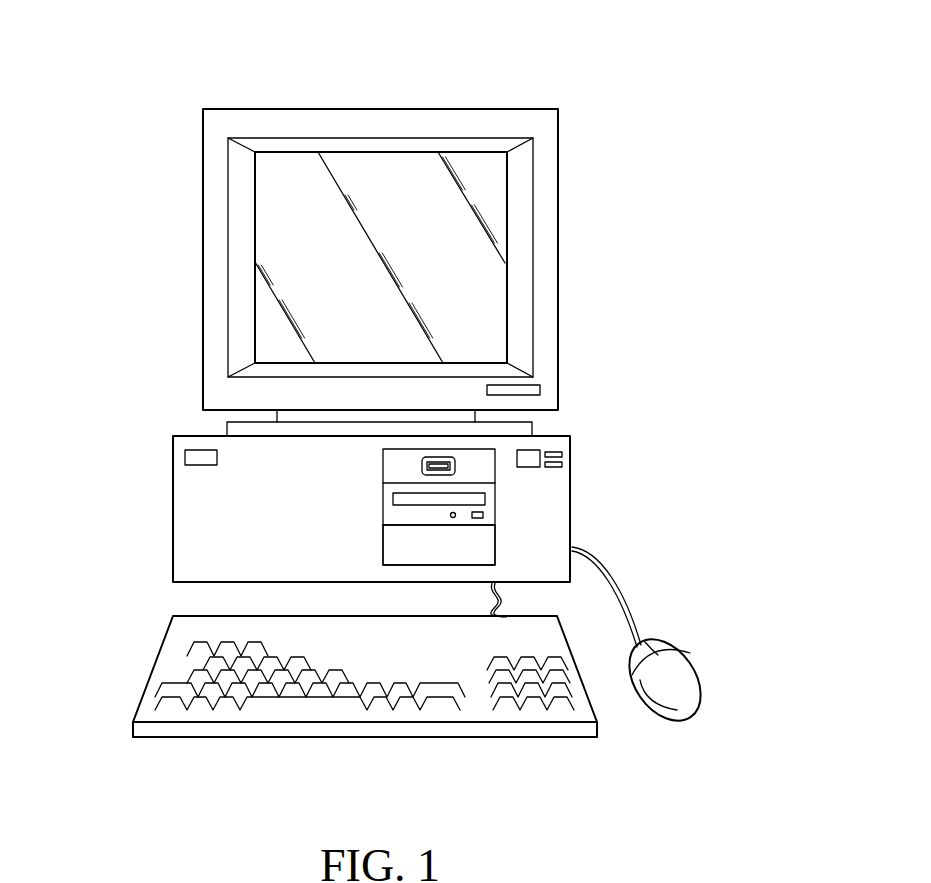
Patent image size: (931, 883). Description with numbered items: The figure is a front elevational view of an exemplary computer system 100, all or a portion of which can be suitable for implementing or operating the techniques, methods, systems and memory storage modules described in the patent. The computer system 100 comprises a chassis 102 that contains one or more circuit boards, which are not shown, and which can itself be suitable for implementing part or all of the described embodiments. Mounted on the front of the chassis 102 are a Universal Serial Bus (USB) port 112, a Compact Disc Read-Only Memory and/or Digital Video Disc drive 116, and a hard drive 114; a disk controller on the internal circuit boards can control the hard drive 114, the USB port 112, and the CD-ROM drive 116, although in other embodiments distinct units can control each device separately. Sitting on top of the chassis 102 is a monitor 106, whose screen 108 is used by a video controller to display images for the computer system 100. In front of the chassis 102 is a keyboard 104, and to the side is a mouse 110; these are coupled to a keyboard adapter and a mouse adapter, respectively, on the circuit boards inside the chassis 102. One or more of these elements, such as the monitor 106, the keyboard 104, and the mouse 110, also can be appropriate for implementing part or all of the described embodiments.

The computer system 100 is at (556, 82).
The chassis 102 is at (173, 512).
The keyboard 104 is at (157, 663).
The monitor 106 is at (273, 108).
The screen 108 is at (300, 262).
The mouse 110 is at (687, 672).
The Universal Serial Bus (USB) port 112 is at (457, 463).
The hard drive 114 is at (487, 545).
The Compact Disc Read-Only Memory (CD-ROM) and/or Digital Video Disc (DVD) drive 116 is at (487, 505).